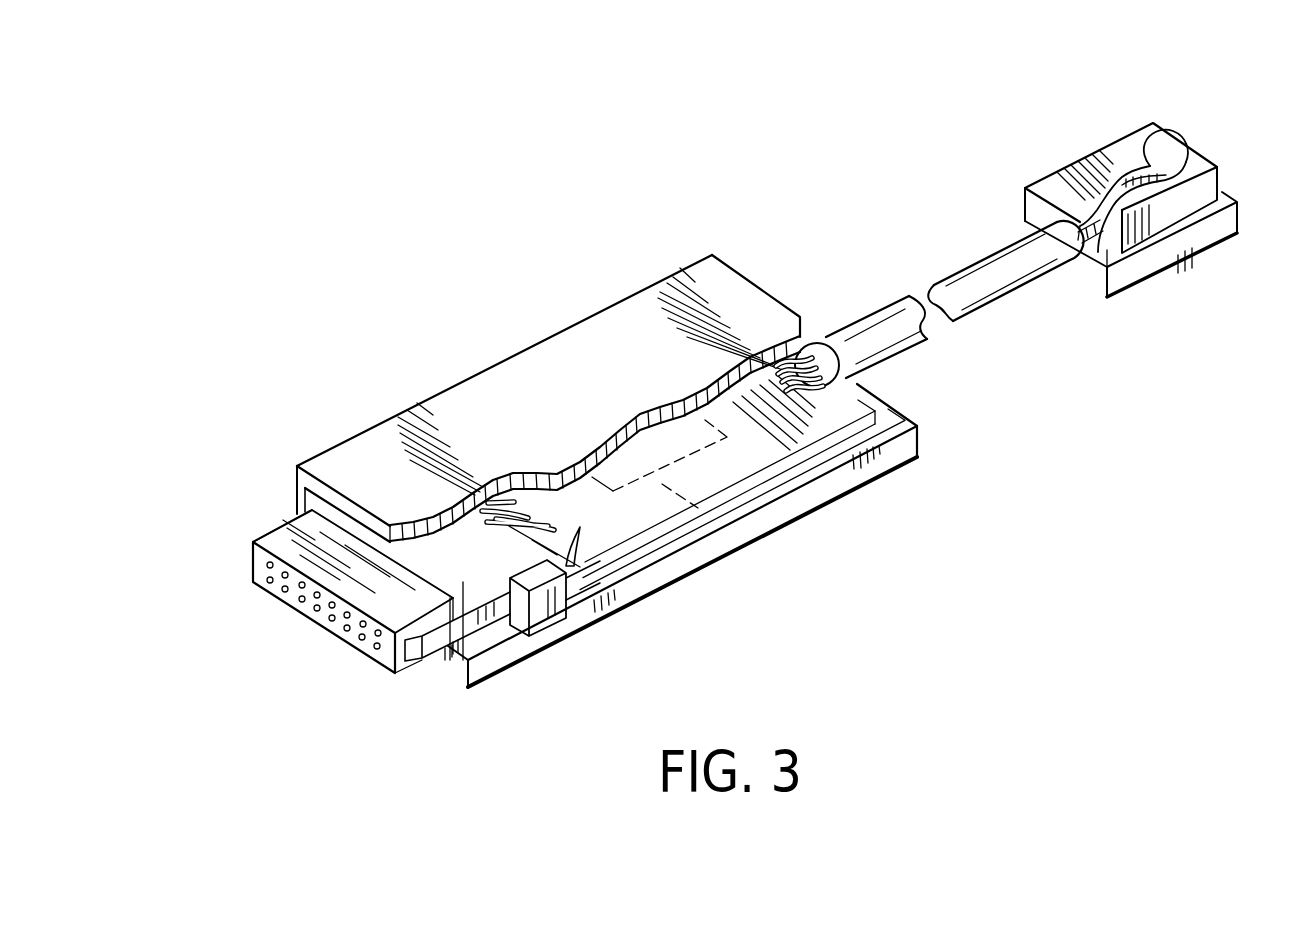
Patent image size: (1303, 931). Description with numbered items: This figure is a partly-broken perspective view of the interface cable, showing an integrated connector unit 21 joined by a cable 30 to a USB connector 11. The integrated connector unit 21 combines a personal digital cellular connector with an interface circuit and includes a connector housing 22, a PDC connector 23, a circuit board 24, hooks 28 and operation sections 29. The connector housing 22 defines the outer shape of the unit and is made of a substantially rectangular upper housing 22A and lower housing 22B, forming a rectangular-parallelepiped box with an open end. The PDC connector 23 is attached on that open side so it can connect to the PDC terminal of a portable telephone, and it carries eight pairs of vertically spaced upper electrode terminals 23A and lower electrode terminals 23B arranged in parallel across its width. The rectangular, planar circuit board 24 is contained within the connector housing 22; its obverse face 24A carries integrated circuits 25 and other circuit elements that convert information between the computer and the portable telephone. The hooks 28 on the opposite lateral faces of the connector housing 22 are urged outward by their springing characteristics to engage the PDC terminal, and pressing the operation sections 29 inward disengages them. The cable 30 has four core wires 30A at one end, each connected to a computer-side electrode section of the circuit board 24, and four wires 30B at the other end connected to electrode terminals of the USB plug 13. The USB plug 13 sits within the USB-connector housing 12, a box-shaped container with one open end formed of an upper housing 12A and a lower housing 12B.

The USB connector 11 is at (1097, 138).
The USB-connector housing 12 is at (1060, 178).
The upper housing 12A is at (1160, 137).
The lower housing 12B is at (1218, 236).
The USB plug 13 is at (1210, 190).
The integrated connector unit 21 is at (500, 352).
The connector housing 22 is at (920, 442).
The upper housing 22A is at (716, 262).
The lower housing 22B is at (778, 520).
The PDC connector 23 is at (290, 545).
The upper electrode terminals 23A is at (492, 488).
The lower electrode terminals 23B is at (283, 593).
The circuit board 24 is at (605, 533).
The obverse face 24A is at (810, 437).
The integrated circuits 25 is at (728, 527).
The hooks 28 is at (487, 607).
The operation sections 29 is at (543, 617).
The cable 30 is at (982, 290).
The core wires 30A is at (802, 355).
The wires 30B is at (1110, 250).